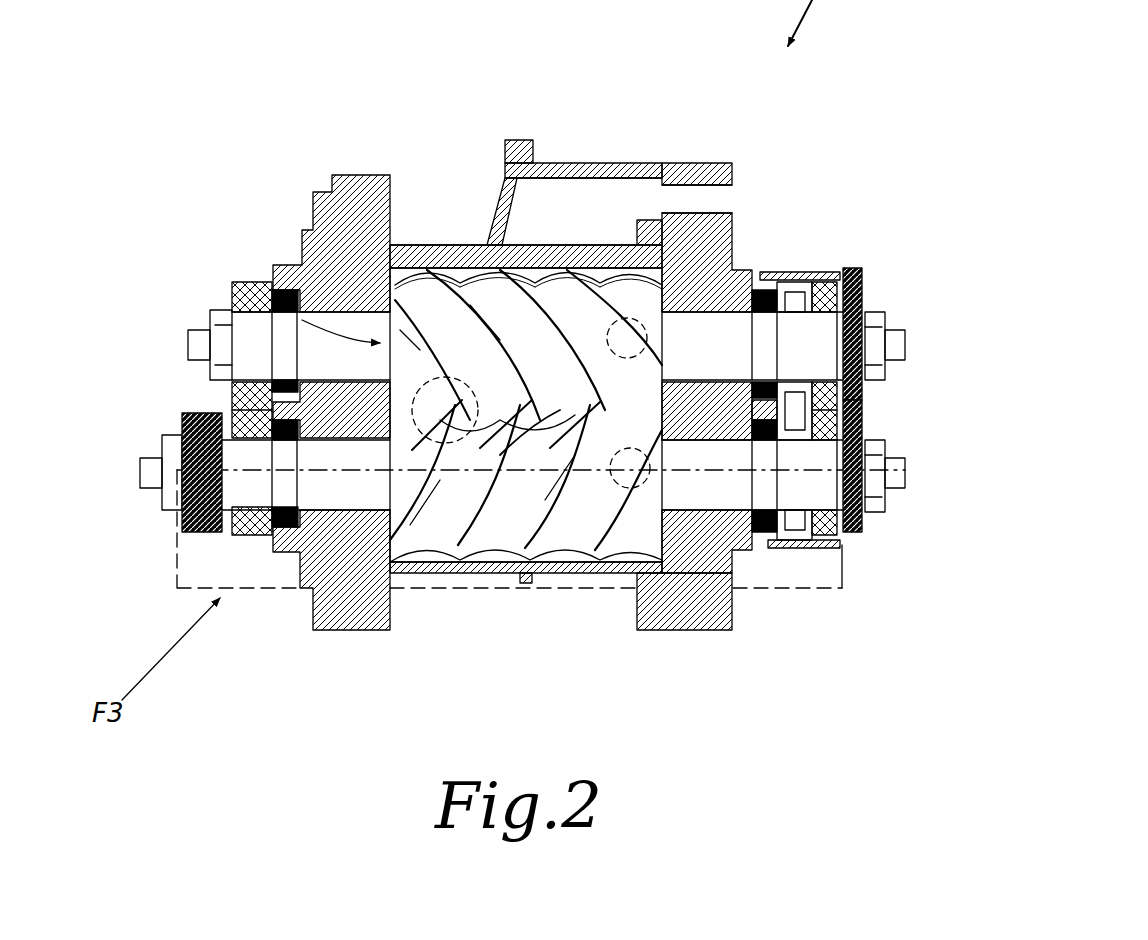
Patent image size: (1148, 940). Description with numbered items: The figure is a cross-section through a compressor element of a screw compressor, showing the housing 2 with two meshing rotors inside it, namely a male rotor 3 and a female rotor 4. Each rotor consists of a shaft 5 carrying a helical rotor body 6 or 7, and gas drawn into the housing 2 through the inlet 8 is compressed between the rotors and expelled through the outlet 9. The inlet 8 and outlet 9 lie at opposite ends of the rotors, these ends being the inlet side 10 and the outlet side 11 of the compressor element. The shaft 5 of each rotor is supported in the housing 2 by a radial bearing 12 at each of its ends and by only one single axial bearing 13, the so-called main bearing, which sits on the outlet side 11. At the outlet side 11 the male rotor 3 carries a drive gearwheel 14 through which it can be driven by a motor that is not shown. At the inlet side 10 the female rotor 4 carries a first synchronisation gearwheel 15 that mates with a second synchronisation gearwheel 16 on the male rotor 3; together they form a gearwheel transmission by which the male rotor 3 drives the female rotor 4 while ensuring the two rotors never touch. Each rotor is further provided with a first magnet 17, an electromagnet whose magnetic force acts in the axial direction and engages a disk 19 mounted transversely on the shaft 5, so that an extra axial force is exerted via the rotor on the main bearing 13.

The housing 2 is at (350, 630).
The male rotor 3 is at (445, 550).
The female rotor 4 is at (437, 318).
The shaft 5 is at (752, 270).
The helical rotor body 6 is at (560, 545).
The helical rotor body 7 is at (530, 292).
The inlet 8 is at (668, 328).
The outlet 9 is at (535, 550).
The inlet side 10 is at (717, 345).
The outlet side 11 is at (302, 320).
The radial bearing 12 is at (300, 292).
The axial bearing 13 is at (232, 305).
The drive gearwheel 14 is at (185, 430).
The first synchronisation gearwheel 15 is at (868, 290).
The second synchronisation gearwheel 16 is at (868, 520).
The first magnet 17 is at (860, 412).
The disk 19 is at (830, 548).